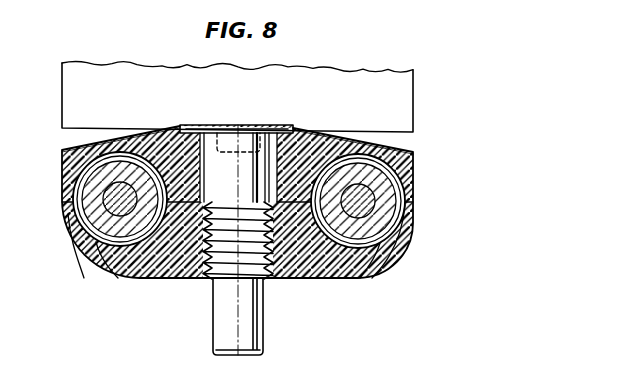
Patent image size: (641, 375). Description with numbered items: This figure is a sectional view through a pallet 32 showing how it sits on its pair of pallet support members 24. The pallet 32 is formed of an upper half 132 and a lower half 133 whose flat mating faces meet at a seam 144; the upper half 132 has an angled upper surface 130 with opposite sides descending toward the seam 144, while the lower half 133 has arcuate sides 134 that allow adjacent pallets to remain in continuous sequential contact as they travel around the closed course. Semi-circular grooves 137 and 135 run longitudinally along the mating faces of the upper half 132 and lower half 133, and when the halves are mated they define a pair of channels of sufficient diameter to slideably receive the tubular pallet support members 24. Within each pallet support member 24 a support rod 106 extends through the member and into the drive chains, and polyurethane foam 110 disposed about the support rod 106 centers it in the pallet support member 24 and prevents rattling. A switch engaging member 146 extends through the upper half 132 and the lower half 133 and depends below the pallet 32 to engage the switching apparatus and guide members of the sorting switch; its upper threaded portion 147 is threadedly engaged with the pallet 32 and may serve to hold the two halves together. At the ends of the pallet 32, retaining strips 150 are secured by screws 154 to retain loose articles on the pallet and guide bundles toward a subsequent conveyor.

The angled upper surface 130 is at (85, 144).
The semi-circular groove 137 is at (92, 148).
The upper half 132 is at (62, 158).
The polyurethane foam 110 is at (73, 196).
The seam 144 is at (68, 205).
The arcuate sides 134 is at (68, 240).
The support rod 106 is at (78, 267).
The pallet 32 is at (82, 293).
The pallet support member 24 is at (124, 275).
The lower half 133 is at (94, 278).
The semi-circular groove 135 is at (150, 278).
The switch engaging member 146 is at (264, 307).
The upper threaded portion 147 is at (198, 280).
The screws 154 is at (258, 374).
The retaining strips 150 is at (354, 374).